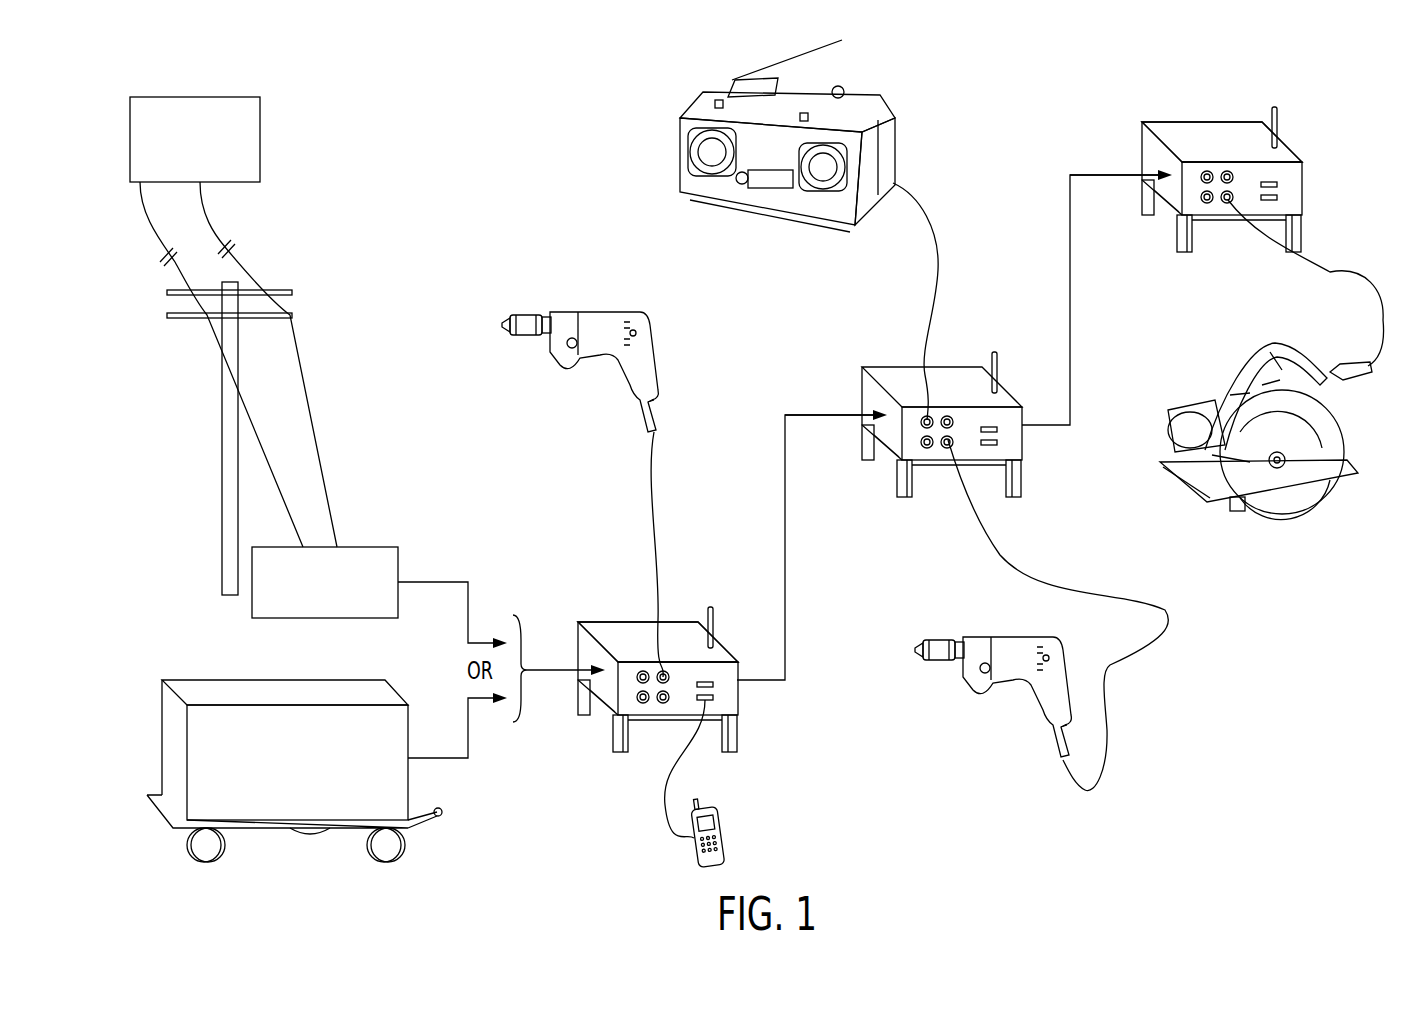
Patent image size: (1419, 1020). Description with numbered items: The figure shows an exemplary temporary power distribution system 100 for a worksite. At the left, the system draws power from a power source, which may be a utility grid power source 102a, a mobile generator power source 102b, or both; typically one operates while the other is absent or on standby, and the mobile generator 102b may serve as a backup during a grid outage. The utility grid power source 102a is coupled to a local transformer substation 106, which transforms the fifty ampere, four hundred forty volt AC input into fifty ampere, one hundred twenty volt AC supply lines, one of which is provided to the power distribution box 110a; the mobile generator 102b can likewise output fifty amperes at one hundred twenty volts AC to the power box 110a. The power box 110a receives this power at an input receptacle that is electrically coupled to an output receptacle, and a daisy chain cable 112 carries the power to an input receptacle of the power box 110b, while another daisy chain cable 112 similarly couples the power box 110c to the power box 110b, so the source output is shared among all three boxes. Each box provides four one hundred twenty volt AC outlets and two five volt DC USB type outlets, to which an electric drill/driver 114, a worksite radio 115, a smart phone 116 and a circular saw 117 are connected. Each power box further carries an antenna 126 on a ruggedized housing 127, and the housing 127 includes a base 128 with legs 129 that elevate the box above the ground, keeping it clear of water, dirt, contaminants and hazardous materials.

The temporary power distribution system 100 is at (460, 88).
The utility grid power source 102a is at (338, 283).
The mobile generator power source 102b is at (312, 799).
The transformer substation 106 is at (250, 603).
The power distribution box 110a is at (658, 637).
The power distribution box 110b is at (942, 382).
The power distribution box 110c is at (1222, 137).
The daisy chain cable 112 is at (785, 558).
The electric drill/driver 114 is at (568, 312).
The worksite radio 115 is at (870, 92).
The smart phone 116 is at (723, 840).
The circular saw 117 is at (1283, 518).
The antenna 126 is at (1026, 369).
The housing 127 is at (939, 360).
The base 128 is at (952, 489).
The legs 129 is at (957, 490).